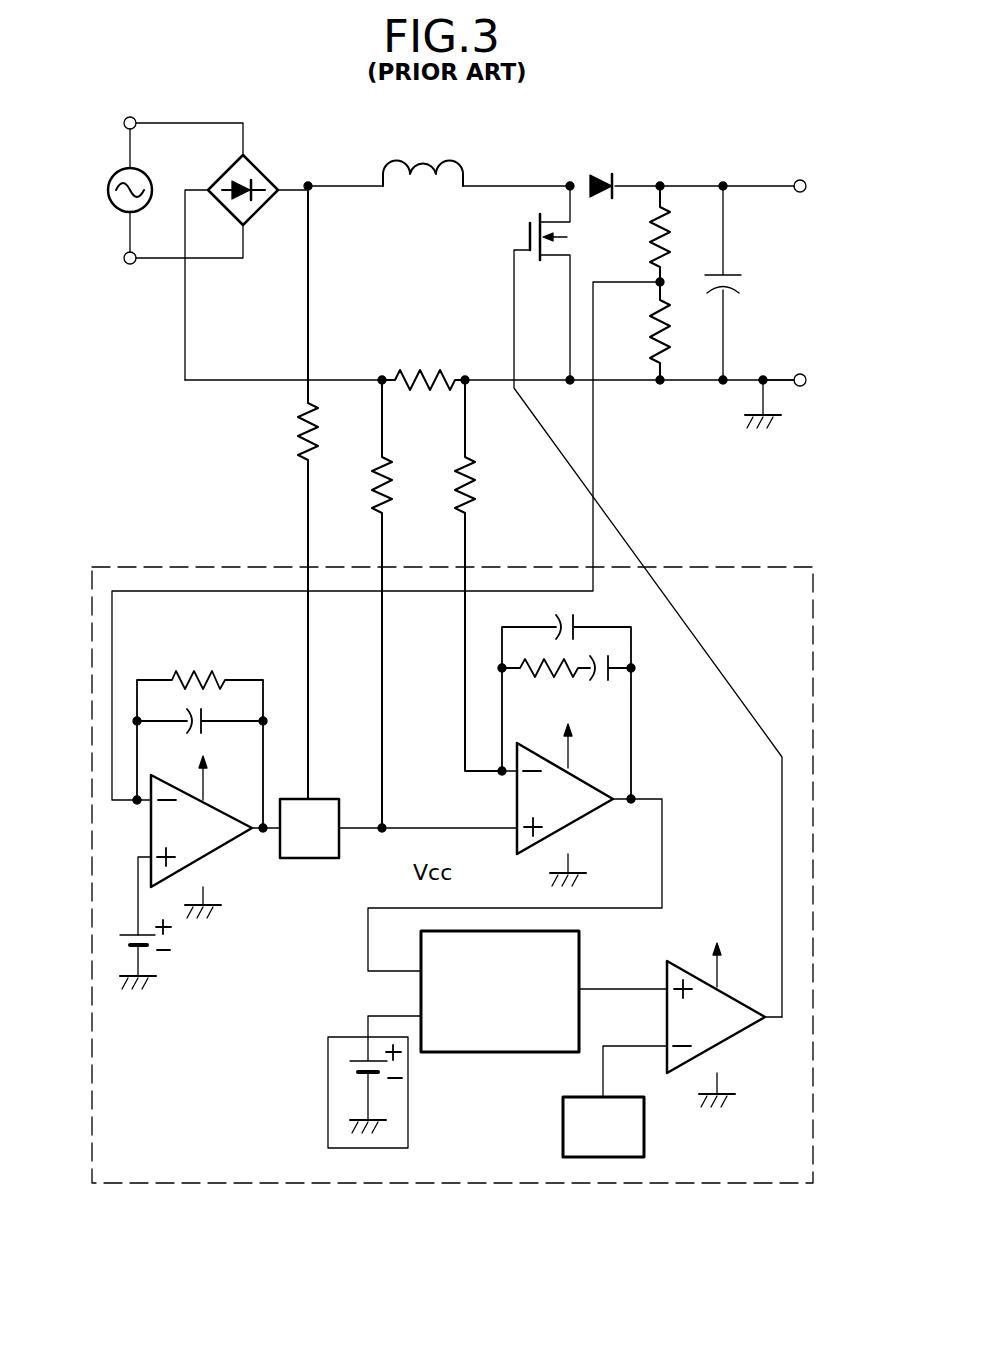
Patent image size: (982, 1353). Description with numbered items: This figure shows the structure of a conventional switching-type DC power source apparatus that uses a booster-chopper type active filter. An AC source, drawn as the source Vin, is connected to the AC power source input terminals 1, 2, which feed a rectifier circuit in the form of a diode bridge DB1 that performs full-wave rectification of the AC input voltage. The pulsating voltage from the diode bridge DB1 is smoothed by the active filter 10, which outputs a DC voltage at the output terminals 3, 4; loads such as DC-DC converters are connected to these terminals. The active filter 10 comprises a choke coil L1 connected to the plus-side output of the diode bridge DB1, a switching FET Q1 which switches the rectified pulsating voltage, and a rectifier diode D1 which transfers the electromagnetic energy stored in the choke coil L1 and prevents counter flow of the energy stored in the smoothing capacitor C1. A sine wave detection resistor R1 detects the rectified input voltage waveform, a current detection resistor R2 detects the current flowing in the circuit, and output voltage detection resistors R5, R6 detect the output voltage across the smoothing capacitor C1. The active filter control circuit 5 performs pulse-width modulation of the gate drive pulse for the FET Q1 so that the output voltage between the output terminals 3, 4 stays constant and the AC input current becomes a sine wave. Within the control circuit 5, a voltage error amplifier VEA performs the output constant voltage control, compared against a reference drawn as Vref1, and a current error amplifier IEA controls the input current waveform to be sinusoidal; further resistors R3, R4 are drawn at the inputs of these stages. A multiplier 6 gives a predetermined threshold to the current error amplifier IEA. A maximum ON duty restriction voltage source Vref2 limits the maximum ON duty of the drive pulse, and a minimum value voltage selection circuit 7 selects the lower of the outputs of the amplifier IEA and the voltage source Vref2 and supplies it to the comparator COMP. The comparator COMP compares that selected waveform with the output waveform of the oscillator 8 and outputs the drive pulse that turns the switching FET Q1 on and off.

The AC power source input terminal 1 is at (123, 124).
The AC power source input terminal 2 is at (123, 259).
The output terminal 3 is at (807, 187).
The output terminal 4 is at (807, 381).
The active filter control circuit 5 is at (183, 565).
The multiplier 6 is at (337, 797).
The minimum value voltage selection circuit 7 is at (581, 943).
The oscillator 8 is at (563, 1118).
The booster-chopper type active filter circuit 10 is at (531, 141).
The AC input voltage source Vin is at (105, 191).
The diode bridge DB1 is at (255, 156).
The choke coil L1 is at (415, 165).
The rectifier diode D1 is at (596, 176).
The switching FET Q1 is at (526, 230).
The sine wave detection resistor R1 is at (300, 415).
The current detection resistor R2 is at (417, 370).
The resistor R3 is at (376, 468).
The resistor R4 is at (457, 468).
The output voltage detection resistor R5 is at (650, 237).
The output voltage detection resistor R6 is at (651, 330).
The smoothing capacitor C1 is at (745, 284).
The reference voltage source Vref1 is at (172, 946).
The maximum ON duty restriction voltage source Vref2 is at (328, 1073).
The voltage error amplifier VEA is at (206, 803).
The current error amplifier IEA is at (515, 793).
The comparator COMP is at (723, 1021).